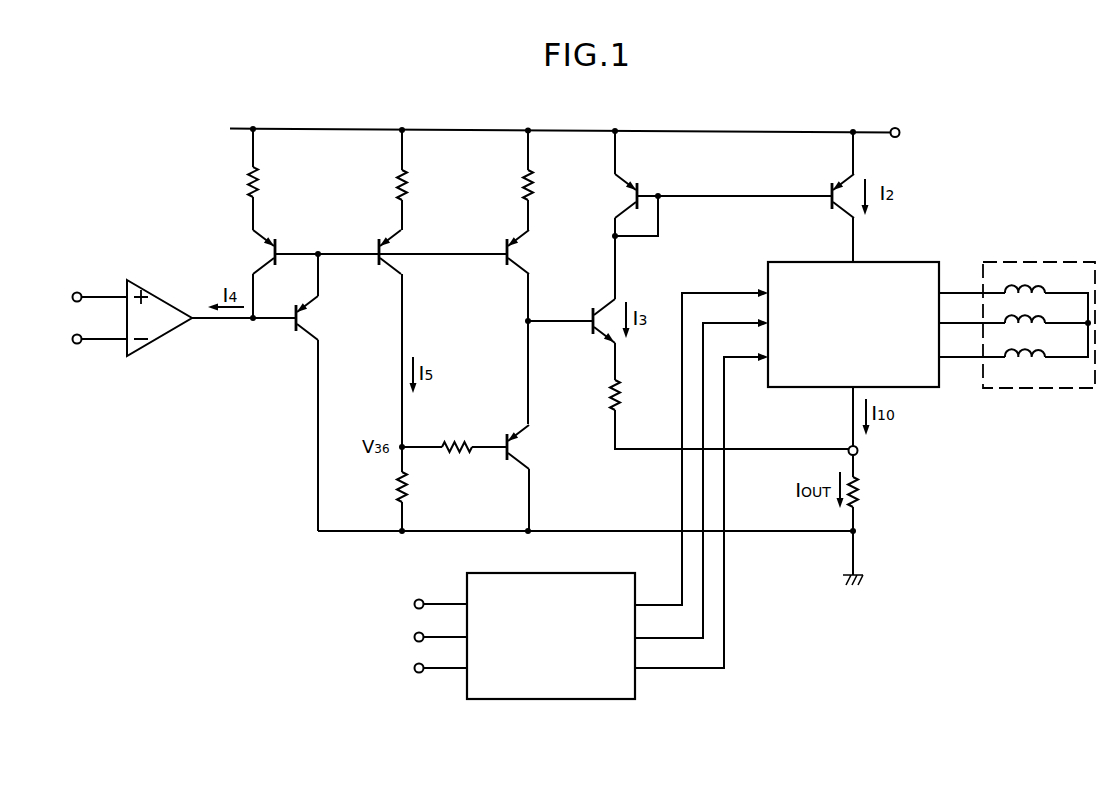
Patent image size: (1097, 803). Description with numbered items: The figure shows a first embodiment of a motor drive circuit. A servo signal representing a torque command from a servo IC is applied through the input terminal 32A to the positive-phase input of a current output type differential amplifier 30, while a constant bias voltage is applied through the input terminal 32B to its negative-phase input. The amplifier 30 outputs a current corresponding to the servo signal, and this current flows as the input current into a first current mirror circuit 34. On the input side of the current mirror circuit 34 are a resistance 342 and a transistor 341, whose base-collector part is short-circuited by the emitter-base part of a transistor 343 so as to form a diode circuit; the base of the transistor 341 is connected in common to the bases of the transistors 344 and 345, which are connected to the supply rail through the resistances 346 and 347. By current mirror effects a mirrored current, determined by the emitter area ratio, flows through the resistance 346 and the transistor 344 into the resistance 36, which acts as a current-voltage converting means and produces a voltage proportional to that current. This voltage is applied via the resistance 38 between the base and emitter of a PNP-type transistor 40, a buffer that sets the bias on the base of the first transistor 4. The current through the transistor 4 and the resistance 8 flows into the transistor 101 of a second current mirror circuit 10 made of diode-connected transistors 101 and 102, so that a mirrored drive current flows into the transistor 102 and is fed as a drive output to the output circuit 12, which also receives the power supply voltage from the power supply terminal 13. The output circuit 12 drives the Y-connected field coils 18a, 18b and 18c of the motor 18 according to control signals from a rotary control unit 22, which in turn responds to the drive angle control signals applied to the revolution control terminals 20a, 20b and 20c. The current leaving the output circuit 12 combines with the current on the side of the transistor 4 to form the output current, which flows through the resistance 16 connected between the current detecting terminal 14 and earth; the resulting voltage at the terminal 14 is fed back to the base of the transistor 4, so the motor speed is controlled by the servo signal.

The power supply terminal 13 is at (894, 127).
The current output type differential amplifier 30 is at (166, 333).
The input terminal 32A is at (77, 292).
The input terminal 32B is at (77, 344).
The first current mirror circuit 34 is at (344, 249).
The transistor 341 is at (278, 266).
The resistance 342 is at (248, 183).
The transistor 343 is at (293, 332).
The transistor 344 is at (379, 268).
The transistor 345 is at (506, 268).
The resistance 346 is at (398, 186).
The resistance 347 is at (524, 186).
The resistance 36 is at (397, 488).
The resistance 38 is at (455, 441).
The PNP-type transistor 40 is at (520, 461).
The second current mirror circuit 10 is at (748, 189).
The transistor 101 is at (631, 208).
The transistor 102 is at (829, 208).
The transistor 4 is at (606, 300).
The resistance 8 is at (620, 399).
The output circuit 12 is at (919, 262).
The current detecting terminal 14 is at (849, 446).
The resistance 16 is at (861, 489).
The motor 18 is at (1017, 346).
The field coil 18a is at (1046, 293).
The field coil 18b is at (1046, 323).
The field coil 18c is at (1046, 357).
The rotary control unit 22 is at (640, 684).
The revolution control terminal 20a is at (419, 599).
The revolution control terminal 20b is at (423, 634).
The revolution control terminal 20c is at (420, 673).